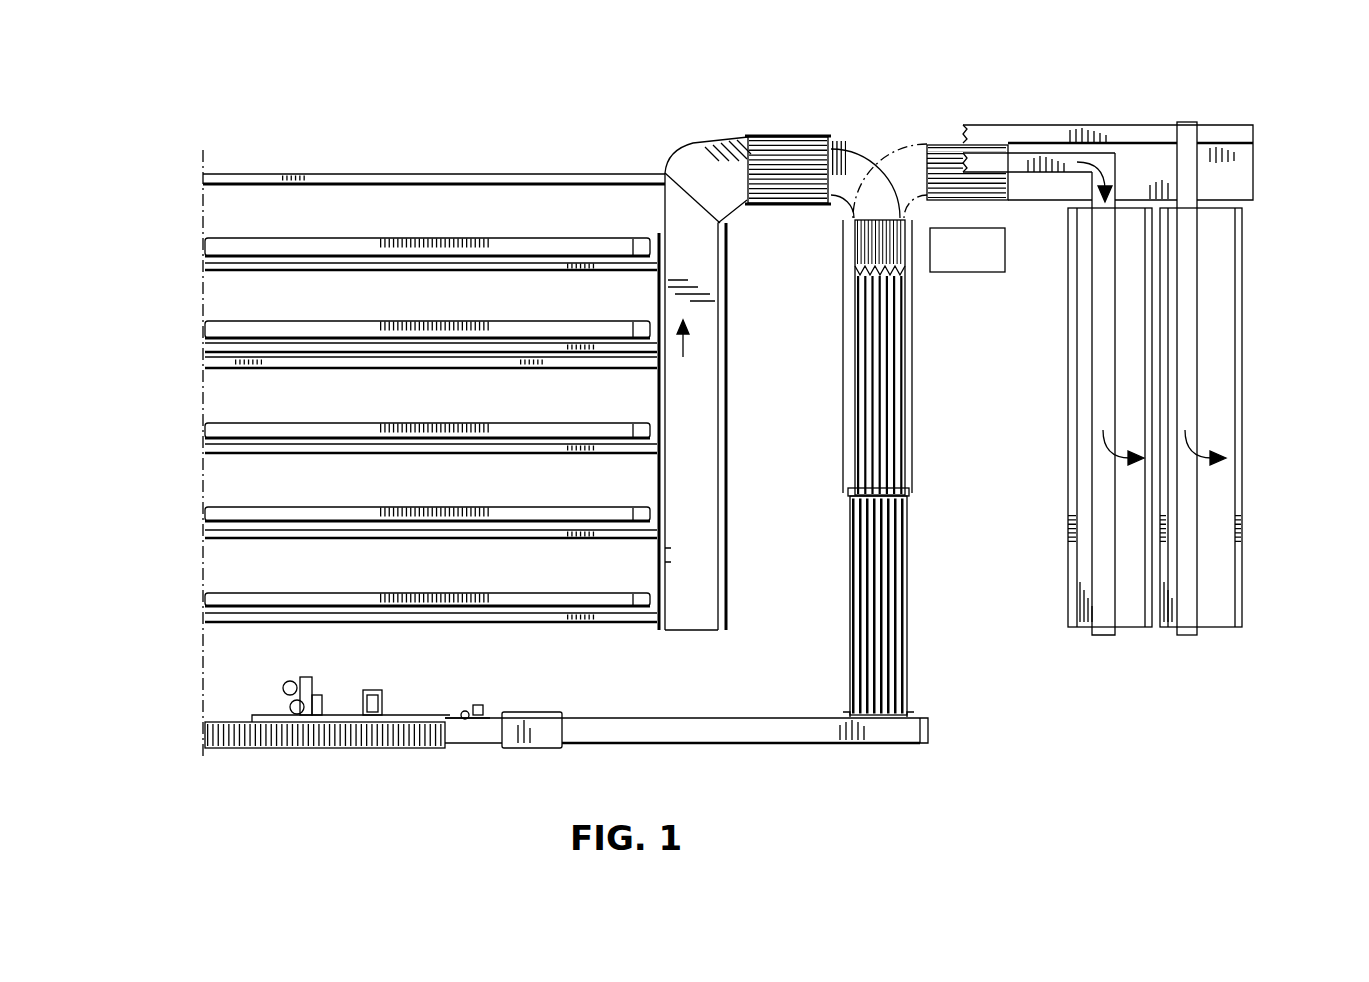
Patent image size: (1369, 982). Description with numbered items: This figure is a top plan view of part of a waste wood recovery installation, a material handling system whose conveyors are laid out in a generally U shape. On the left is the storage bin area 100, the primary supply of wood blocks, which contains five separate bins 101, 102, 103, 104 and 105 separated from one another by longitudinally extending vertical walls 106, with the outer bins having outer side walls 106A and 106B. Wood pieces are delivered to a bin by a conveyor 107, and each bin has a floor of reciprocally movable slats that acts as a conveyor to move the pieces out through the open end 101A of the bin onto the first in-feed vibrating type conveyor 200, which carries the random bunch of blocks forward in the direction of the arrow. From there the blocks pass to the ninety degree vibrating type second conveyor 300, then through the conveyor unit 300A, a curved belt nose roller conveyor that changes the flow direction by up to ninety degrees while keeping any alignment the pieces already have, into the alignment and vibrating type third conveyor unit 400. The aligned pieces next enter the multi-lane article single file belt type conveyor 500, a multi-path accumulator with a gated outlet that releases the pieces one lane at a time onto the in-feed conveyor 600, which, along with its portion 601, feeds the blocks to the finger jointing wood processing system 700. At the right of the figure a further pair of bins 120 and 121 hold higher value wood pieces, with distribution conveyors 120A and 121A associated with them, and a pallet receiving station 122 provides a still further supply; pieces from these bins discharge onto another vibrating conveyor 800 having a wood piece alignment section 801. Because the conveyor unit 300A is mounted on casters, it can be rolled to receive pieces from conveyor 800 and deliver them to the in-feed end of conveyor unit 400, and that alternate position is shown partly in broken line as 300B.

The storage bin area 100 is at (366, 636).
The bin 101 is at (305, 590).
The bin 102 is at (305, 503).
The bin 103 is at (305, 418).
The bin 104 is at (305, 317).
The bin 105 is at (305, 233).
The longitudinally extending vertical walls 106 is at (380, 262).
The outer side wall 106A is at (610, 620).
The outer side wall 106B is at (470, 175).
The conveyor 107 is at (442, 600).
The open end of bin 101A is at (667, 557).
The first in-feed vibrating type conveyor 200 is at (808, 405).
The 90 degree vibrating type second conveyor 300 is at (772, 115).
The conveyor unit 300A is at (853, 157).
The broken line position of conveyor unit 300B is at (900, 153).
The alignment and vibrating type third conveyor unit 400 is at (918, 416).
The multi-lane article single file belt type conveyor 500 is at (912, 616).
The in-feed conveyor 600 is at (738, 775).
The base rail bottom 601 is at (820, 743).
The wood processing system 700 is at (357, 782).
The vibrating conveyor 800 is at (1152, 163).
The wood piece alignment section 801 is at (948, 163).
The bin 120 is at (1133, 607).
The wood piece distribution conveyor 120A is at (1100, 568).
The bin 121 is at (1213, 607).
The wood piece distribution conveyor 121A is at (1190, 577).
The pallet receiving station 122 is at (986, 275).